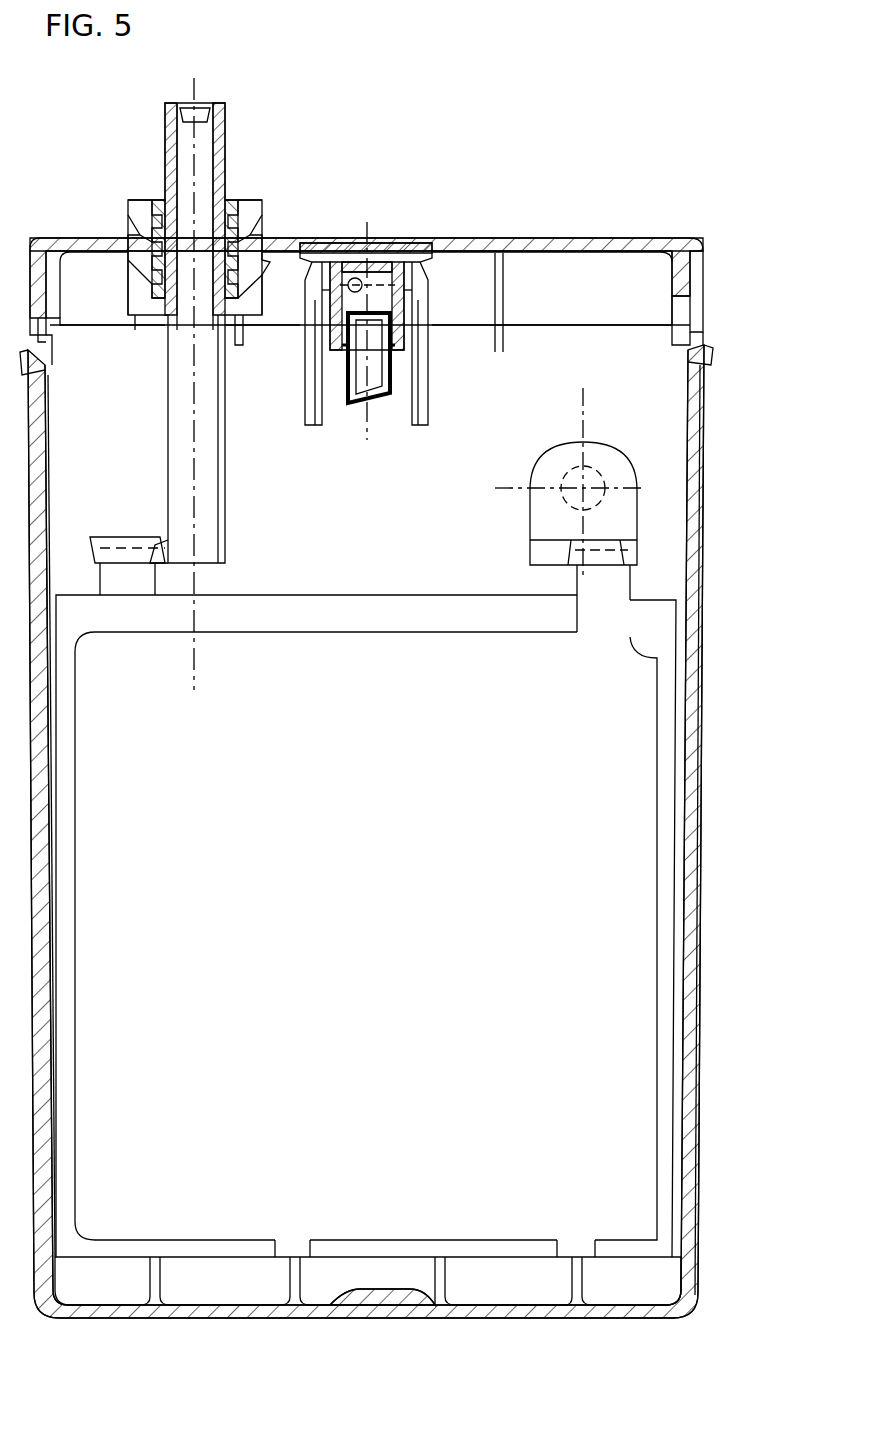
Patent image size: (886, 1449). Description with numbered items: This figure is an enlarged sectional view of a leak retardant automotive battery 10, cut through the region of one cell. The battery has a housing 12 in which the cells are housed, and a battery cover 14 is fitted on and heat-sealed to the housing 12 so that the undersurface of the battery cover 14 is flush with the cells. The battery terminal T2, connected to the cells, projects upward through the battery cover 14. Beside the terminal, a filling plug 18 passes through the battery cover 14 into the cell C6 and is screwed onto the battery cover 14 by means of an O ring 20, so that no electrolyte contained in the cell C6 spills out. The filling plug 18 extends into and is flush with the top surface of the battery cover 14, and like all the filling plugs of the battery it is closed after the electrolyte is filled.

The battery 10 is at (630, 108).
The housing 12 is at (707, 668).
The battery cover 14 is at (707, 282).
The filling plug 18 is at (428, 260).
The O ring 20 is at (318, 262).
The battery terminal T2 is at (228, 172).
The cell C6 is at (513, 352).